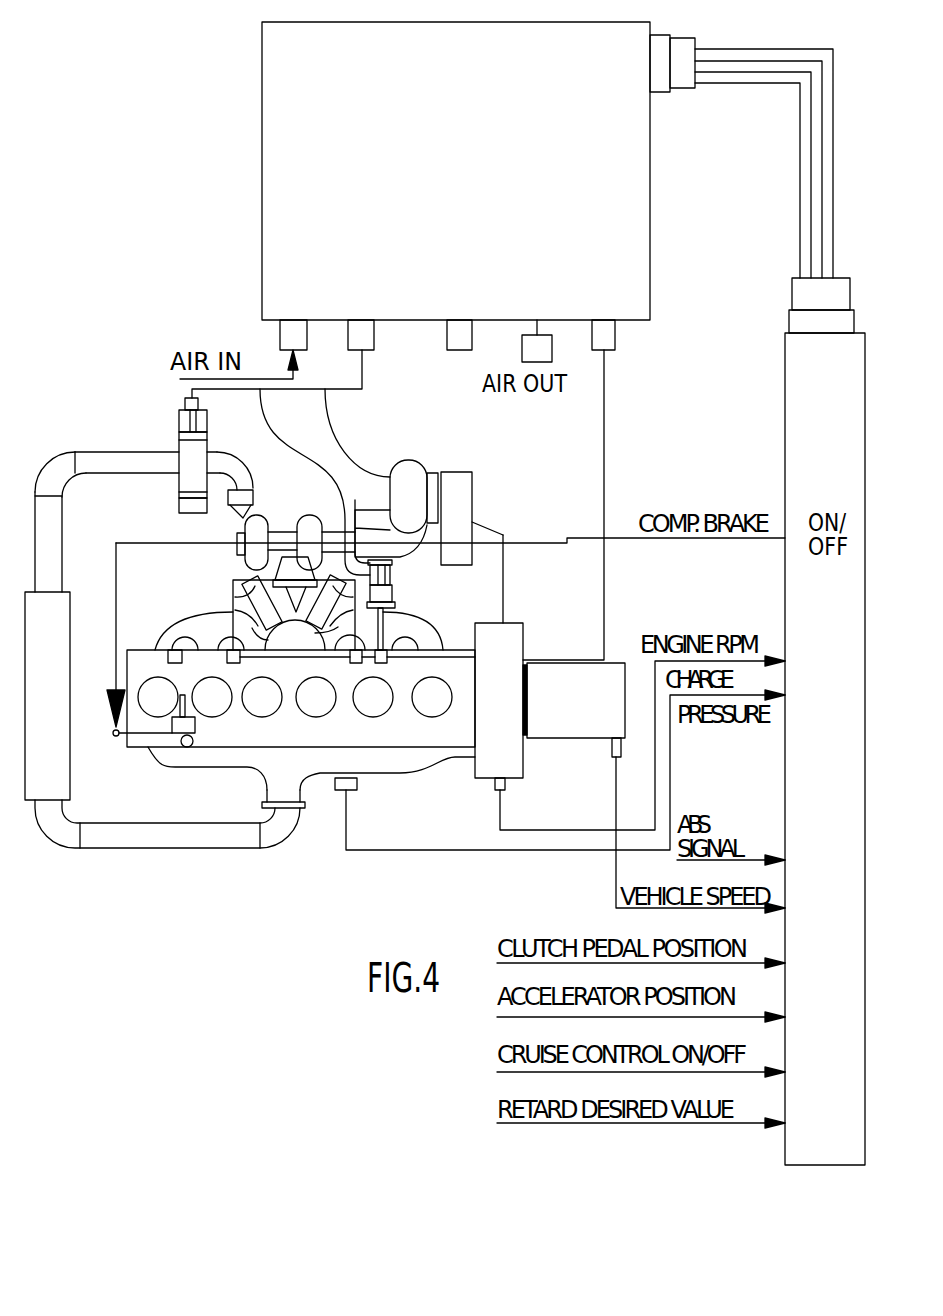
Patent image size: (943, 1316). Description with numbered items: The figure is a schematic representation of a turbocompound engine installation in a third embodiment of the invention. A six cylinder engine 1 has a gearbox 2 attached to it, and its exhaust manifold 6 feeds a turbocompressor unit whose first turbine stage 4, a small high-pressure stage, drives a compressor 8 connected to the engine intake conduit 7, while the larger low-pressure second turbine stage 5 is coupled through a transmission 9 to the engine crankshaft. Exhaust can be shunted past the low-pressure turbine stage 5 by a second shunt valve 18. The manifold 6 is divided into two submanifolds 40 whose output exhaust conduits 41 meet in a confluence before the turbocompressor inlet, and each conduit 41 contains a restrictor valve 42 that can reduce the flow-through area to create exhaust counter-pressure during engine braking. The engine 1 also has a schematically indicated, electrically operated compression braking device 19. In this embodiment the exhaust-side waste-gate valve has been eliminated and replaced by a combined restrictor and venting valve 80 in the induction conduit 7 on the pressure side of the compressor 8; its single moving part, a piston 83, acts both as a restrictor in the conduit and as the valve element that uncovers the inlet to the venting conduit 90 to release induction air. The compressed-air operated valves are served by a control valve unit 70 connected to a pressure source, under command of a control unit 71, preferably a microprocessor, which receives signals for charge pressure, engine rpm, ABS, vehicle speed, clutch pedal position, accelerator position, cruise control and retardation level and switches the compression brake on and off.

The six cylinder engine 1 is at (290, 738).
The gearbox 2 is at (579, 723).
The first turbine stage 4 is at (300, 520).
The second turbine stage 5 is at (410, 465).
The engine exhaust manifold 6 is at (180, 620).
The engine intake conduit 7 is at (110, 470).
The compressor 8 is at (240, 522).
The transmission 9 is at (505, 593).
The second shunt valve 18 is at (395, 578).
The compression braking device 19 is at (195, 740).
The submanifold 40 is at (221, 603).
The output exhaust conduit 41 is at (275, 637).
The restrictor valve 42 is at (240, 580).
The control valve unit 70 is at (468, 130).
The control unit 71 is at (828, 380).
The combined restrictor and venting valve 80 is at (207, 433).
The piston 83 is at (179, 443).
The venting conduit 90 is at (179, 485).